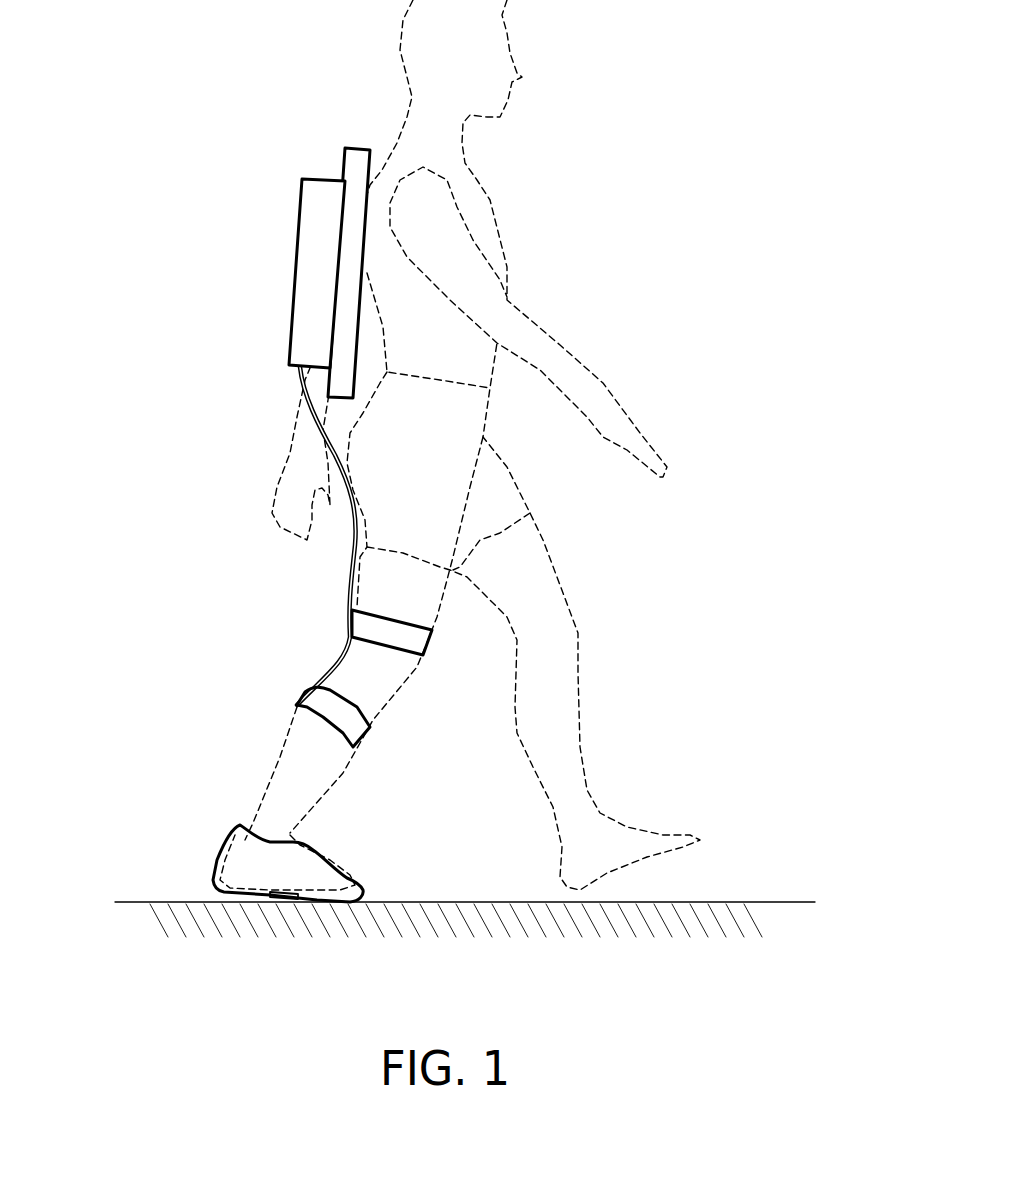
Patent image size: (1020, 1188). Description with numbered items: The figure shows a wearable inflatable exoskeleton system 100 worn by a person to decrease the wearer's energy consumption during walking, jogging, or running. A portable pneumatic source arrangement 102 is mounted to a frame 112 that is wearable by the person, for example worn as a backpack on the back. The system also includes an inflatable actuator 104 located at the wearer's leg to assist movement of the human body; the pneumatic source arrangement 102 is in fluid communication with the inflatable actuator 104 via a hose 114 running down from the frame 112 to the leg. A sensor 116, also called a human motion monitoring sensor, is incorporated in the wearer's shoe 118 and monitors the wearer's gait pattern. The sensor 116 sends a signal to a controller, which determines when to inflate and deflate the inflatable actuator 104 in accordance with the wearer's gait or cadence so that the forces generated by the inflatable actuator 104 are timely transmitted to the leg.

The wearable inflatable exoskeleton system 100 is at (196, 68).
The portable pneumatic source arrangement 102 is at (296, 268).
The inflatable actuator 104 is at (333, 657).
The frame 112 is at (344, 163).
The hose 114 is at (312, 413).
The sensor 116 is at (283, 898).
The shoe 118 is at (340, 878).